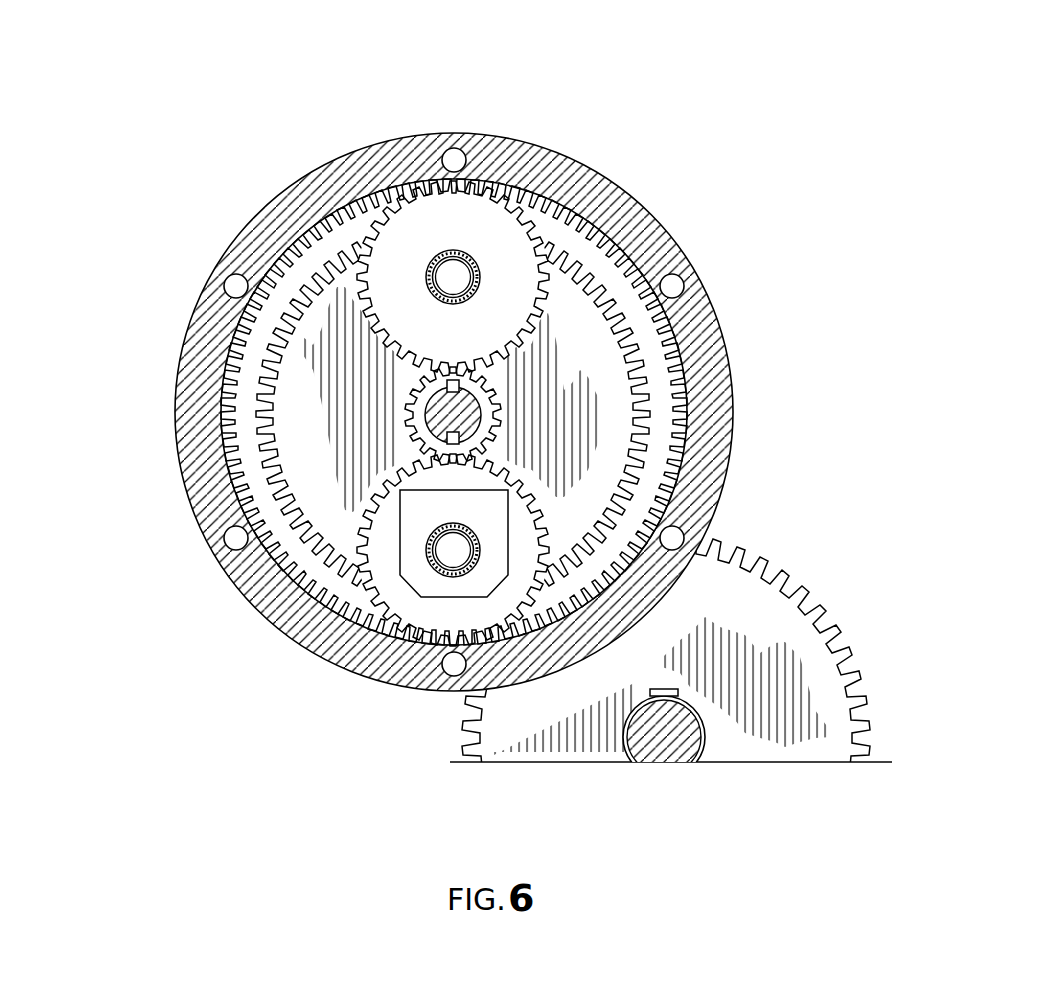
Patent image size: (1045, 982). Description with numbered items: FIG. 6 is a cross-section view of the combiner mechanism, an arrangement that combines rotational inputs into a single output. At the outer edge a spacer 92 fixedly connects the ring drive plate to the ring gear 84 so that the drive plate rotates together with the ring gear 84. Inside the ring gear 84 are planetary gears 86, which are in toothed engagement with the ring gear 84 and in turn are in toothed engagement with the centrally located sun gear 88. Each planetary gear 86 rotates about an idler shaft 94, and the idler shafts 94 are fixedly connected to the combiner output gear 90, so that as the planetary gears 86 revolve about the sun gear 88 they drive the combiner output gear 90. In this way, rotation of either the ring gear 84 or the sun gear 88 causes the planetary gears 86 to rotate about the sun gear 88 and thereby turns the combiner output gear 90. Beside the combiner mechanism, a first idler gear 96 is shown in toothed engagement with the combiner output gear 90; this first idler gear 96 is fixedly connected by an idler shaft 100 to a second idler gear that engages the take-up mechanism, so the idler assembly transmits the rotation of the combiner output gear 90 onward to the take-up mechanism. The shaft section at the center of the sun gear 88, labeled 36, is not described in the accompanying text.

The drive shaft 36 is at (428, 440).
The ring gear 84 is at (657, 327).
The planetary gears 86 is at (380, 240).
The sun gear 88 is at (407, 410).
The combiner output gear 90 is at (650, 402).
The spacer 92 is at (602, 173).
The idler shafts 94 is at (453, 277).
The first idler gear 96 is at (823, 608).
The idler shaft 100 is at (660, 733).